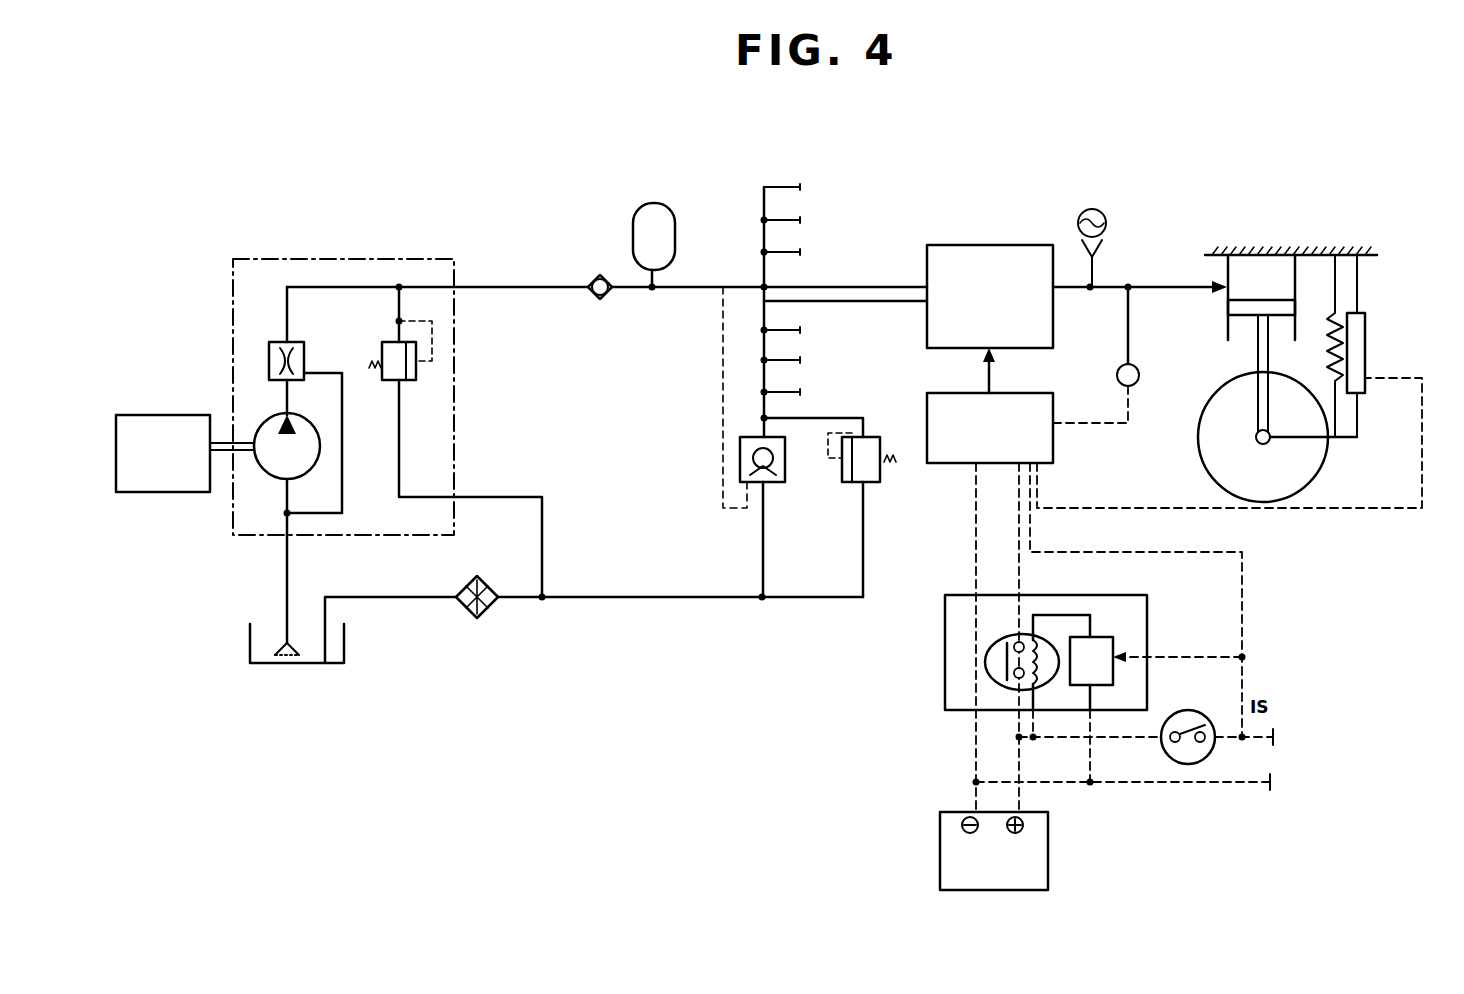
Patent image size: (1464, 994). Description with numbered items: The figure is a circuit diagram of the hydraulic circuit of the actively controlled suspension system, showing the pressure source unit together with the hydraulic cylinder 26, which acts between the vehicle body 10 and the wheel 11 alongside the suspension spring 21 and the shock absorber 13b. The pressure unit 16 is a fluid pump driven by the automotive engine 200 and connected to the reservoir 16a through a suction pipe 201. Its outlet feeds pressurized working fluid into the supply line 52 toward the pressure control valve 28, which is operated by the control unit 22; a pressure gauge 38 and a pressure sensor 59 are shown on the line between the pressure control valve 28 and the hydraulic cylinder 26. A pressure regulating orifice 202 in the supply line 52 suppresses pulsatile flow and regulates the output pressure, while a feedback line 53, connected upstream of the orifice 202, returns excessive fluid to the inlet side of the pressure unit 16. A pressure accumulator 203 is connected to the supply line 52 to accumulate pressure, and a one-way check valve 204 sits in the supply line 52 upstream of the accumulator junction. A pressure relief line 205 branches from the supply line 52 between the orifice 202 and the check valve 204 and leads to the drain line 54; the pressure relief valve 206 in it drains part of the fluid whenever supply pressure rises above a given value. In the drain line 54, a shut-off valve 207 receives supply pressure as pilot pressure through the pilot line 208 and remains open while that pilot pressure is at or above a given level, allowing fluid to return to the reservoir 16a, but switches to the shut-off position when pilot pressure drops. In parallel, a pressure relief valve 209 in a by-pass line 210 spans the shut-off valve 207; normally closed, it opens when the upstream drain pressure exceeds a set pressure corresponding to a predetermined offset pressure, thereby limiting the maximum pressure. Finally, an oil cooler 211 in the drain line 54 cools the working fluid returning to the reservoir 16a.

The vehicle body 10 is at (1296, 253).
The wheel 11 is at (1263, 502).
The shock absorber 13b is at (1347, 352).
The pressure unit 16 is at (257, 483).
The reservoir 16a is at (250, 643).
The suspension spring 21 is at (1365, 327).
The control unit 22 is at (927, 405).
The hydraulic cylinder 26 is at (1228, 302).
The pressure control valve 28 is at (985, 245).
The pressure gauge 38 is at (1081, 292).
The supply line 52 is at (488, 286).
The feedback line 53 is at (343, 416).
The drain line 54 is at (690, 600).
The pressure sensor 59 is at (1139, 375).
The automotive engine 200 is at (162, 415).
The suction pipe 201 is at (288, 575).
The pressure regulating orifice 202 is at (269, 361).
The pressure accumulator 203 is at (677, 220).
The one-way check valve 204 is at (597, 278).
The pressure relief line 205 is at (400, 450).
The pressure relief valve 206 is at (418, 373).
The shut-off valve 207 is at (742, 468).
The pilot line 208 is at (762, 348).
The pressure relief valve 209 is at (878, 484).
The by-pass line 210 is at (860, 538).
The oil cooler 211 is at (494, 608).